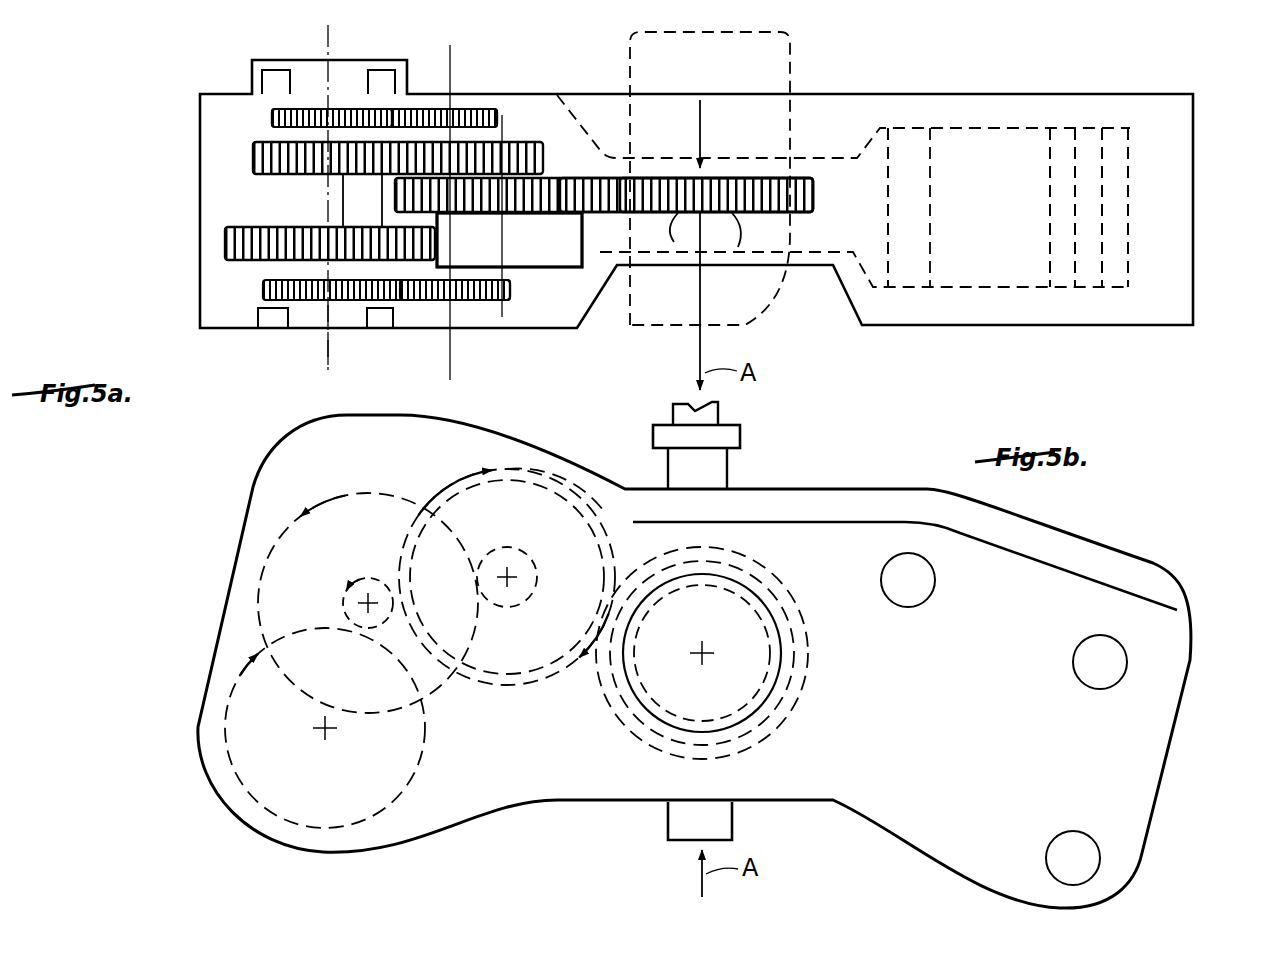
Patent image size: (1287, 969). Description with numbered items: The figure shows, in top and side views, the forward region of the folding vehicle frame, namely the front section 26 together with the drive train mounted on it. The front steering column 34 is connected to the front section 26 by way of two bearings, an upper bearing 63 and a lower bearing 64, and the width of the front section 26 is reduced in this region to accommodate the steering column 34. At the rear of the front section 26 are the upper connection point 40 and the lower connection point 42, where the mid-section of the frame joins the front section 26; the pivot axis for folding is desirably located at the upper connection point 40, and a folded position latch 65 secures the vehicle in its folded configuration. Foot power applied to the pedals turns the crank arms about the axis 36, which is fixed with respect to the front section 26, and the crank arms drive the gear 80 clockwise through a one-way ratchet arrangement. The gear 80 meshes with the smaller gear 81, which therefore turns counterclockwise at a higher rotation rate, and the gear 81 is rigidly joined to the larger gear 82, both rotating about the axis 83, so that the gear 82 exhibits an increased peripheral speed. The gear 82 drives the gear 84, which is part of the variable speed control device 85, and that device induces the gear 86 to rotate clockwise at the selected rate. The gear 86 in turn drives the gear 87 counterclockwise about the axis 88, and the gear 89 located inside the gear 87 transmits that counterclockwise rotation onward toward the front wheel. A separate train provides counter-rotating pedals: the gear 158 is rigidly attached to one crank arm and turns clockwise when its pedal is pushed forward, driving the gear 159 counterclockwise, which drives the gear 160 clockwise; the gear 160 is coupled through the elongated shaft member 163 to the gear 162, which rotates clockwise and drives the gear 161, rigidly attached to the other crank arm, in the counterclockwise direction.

In FIG. 5A, the front section 26 is at (1028, 76).
In FIG. 5B, the front section 26 is at (1092, 518).
In FIG. 5A, the front steering column 34 is at (790, 76).
In FIG. 5A, the axis 36 is at (330, 340).
In FIG. 5B, the axis 36 is at (342, 734).
In FIG. 5A, the upper connection point 40 is at (1127, 300).
In FIG. 5B, the upper connection point 40 is at (1114, 676).
In FIG. 5A, the lower connection point 42 is at (1056, 300).
In FIG. 5B, the lower connection point 42 is at (1087, 872).
In FIG. 5B, the upper bearing 63 is at (735, 473).
In FIG. 5B, the lower bearing 64 is at (672, 828).
In FIG. 5A, the folded position latch 65 is at (930, 326).
In FIG. 5B, the folded position latch 65 is at (922, 594).
In FIG. 5A, the gear 80 is at (258, 265).
In FIG. 5B, the gear 80 is at (403, 786).
In FIG. 5A, the gear 81 is at (380, 227).
In FIG. 5B, the gear 81 is at (360, 628).
In FIG. 5A, the gear 82 is at (262, 166).
In FIG. 5B, the gear 82 is at (280, 533).
In FIG. 5A, the axis 83 is at (330, 222).
In FIG. 5B, the axis 83 is at (377, 585).
In FIG. 5A, the gear 84 is at (505, 142).
In FIG. 5B, the gear 84 is at (522, 548).
In FIG. 5A, the variable speed control device 85 is at (568, 258).
In FIG. 5B, the variable speed control device 85 is at (527, 472).
In FIG. 5A, the gear 86 is at (553, 186).
In FIG. 5B, the gear 86 is at (583, 479).
In FIG. 5A, the gear 87 is at (690, 178).
In FIG. 5B, the gear 87 is at (800, 604).
In FIG. 5A, the axis 88 is at (705, 122).
In FIG. 5B, the axis 88 is at (708, 662).
In FIG. 5B, the gear 89 is at (768, 634).
In FIG. 5A, the gear 158 is at (272, 120).
In FIG. 5A, the gear 159 is at (362, 109).
In FIG. 5A, the gear 160 is at (472, 109).
In FIG. 5A, the gear 161 is at (320, 302).
In FIG. 5A, the gear 162 is at (470, 301).
In FIG. 5A, the elongated shaft member 163 is at (457, 222).